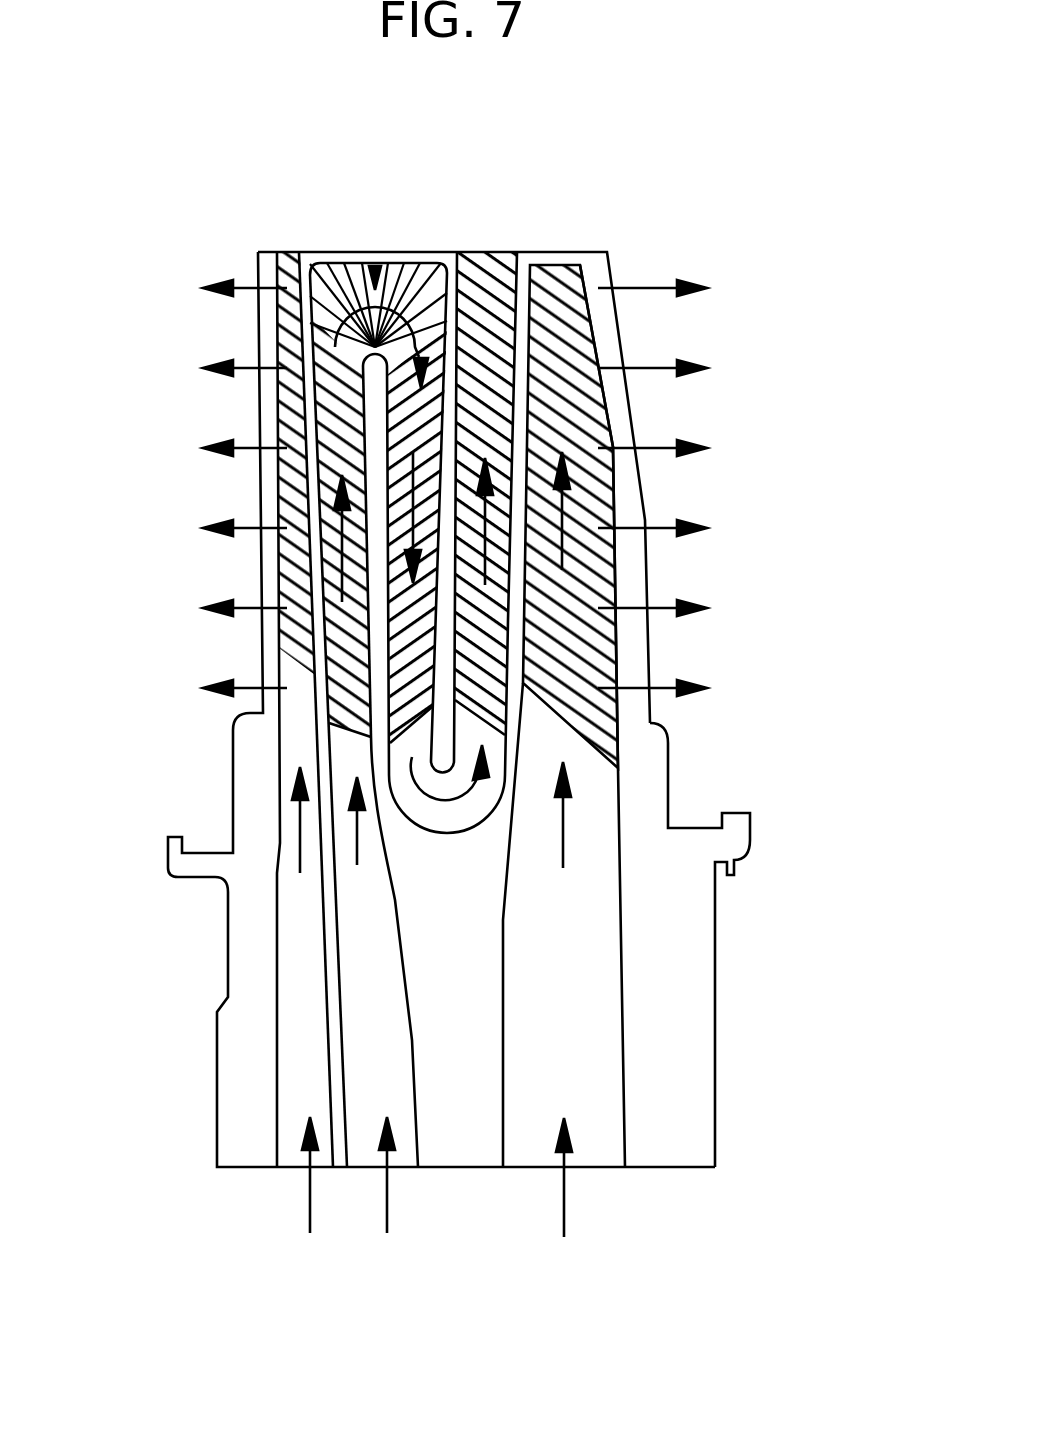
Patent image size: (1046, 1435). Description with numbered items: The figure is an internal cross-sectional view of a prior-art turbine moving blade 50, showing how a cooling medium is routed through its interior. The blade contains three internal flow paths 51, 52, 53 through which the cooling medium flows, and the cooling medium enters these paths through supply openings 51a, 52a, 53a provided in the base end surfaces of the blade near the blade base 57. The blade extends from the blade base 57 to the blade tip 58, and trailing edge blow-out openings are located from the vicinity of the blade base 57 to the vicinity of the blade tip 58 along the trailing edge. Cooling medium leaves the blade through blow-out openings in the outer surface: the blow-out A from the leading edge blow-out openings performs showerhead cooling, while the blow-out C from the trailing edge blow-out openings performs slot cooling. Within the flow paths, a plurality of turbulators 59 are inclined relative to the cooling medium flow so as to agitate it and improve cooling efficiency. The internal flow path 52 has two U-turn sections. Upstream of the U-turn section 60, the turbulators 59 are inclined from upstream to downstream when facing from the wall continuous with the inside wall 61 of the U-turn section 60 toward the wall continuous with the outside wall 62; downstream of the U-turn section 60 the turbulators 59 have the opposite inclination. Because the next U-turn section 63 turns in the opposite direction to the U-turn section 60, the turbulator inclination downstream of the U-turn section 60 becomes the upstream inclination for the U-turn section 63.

The turbine moving blade 50 is at (259, 334).
The internal flow path 51 is at (297, 944).
The supply opening 51a is at (297, 1168).
The internal flow path 52 is at (378, 1082).
The supply opening 52a is at (367, 1168).
The internal flow path 53 is at (598, 1032).
The supply opening 53a is at (601, 1170).
The blade base 57 is at (651, 707).
The blade tip 58 is at (612, 270).
The turbulators 59 is at (353, 406).
The U-turn section 60 is at (377, 264).
The inside wall 61 is at (322, 358).
The outside wall 62 is at (336, 372).
The U-turn section 63 is at (452, 817).
The blow-out A is at (226, 694).
The blow-out C is at (690, 603).